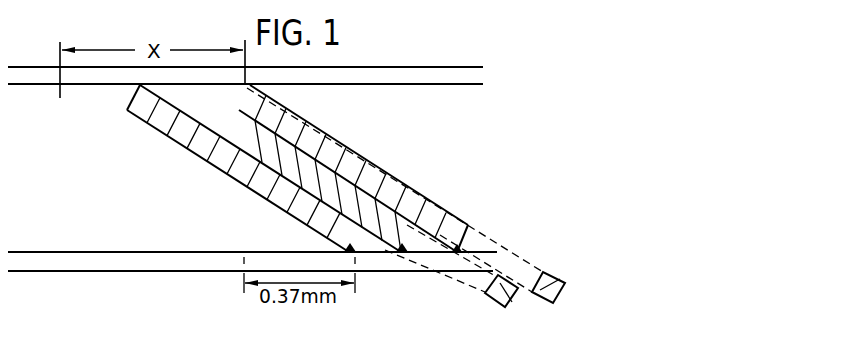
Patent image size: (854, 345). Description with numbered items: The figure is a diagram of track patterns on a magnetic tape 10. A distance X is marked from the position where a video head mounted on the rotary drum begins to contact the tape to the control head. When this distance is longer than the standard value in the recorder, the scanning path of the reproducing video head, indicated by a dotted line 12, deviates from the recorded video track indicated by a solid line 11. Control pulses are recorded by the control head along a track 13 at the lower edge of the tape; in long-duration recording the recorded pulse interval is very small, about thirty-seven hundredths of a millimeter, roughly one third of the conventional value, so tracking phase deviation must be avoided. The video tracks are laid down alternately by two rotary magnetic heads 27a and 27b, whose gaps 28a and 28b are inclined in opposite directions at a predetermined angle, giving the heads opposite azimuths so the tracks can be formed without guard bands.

The magnetic tape 10 is at (418, 92).
The track 11 is at (333, 140).
The scanning path 12 is at (412, 190).
The control track 13 is at (383, 268).
The rotary magnetic head 27a is at (552, 270).
The rotary magnetic head 27b is at (490, 306).
The gap 28a is at (547, 304).
The gap 28b is at (488, 285).